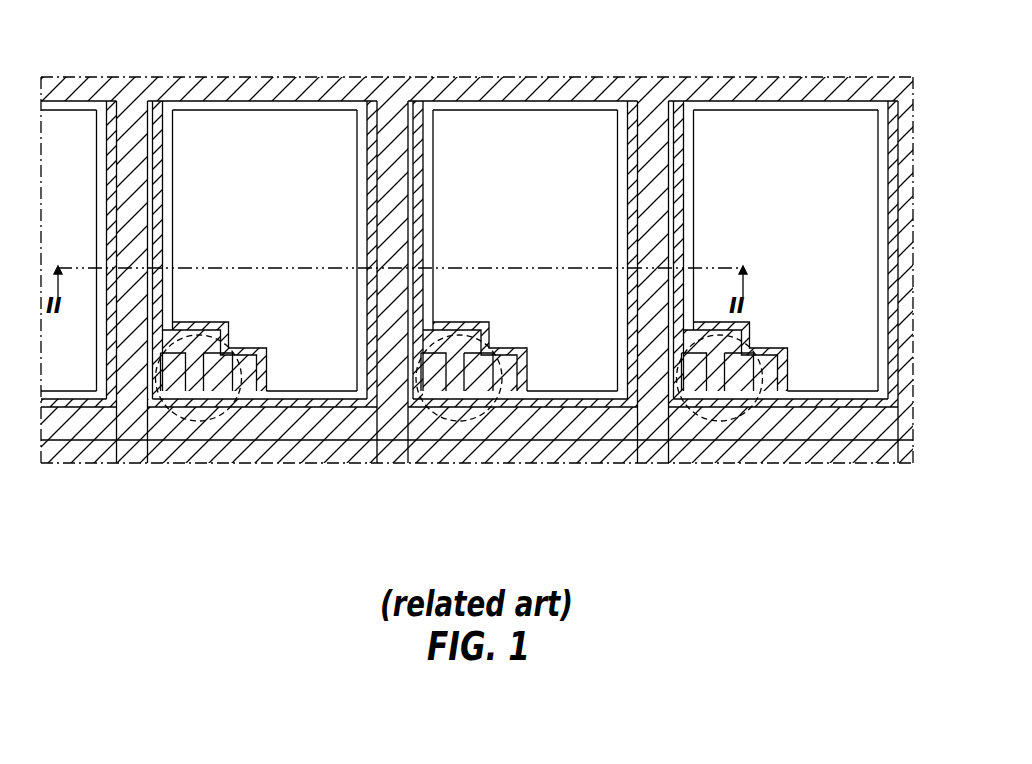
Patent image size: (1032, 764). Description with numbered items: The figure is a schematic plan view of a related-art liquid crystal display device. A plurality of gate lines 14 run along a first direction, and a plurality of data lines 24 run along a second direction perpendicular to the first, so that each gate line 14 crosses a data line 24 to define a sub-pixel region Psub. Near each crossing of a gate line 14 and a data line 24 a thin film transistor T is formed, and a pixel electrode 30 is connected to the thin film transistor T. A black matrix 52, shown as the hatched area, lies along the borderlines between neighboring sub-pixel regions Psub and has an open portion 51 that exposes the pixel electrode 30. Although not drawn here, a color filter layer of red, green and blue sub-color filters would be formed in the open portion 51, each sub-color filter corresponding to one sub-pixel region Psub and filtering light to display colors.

The gate line 14 is at (860, 425).
The data line 24 is at (149, 178).
The pixel electrode 30 is at (52, 101).
The open portion 51 is at (218, 124).
The black matrix 52 is at (84, 110).
The thin film transistor T is at (199, 421).
The sub-pixel region Psub is at (573, 407).